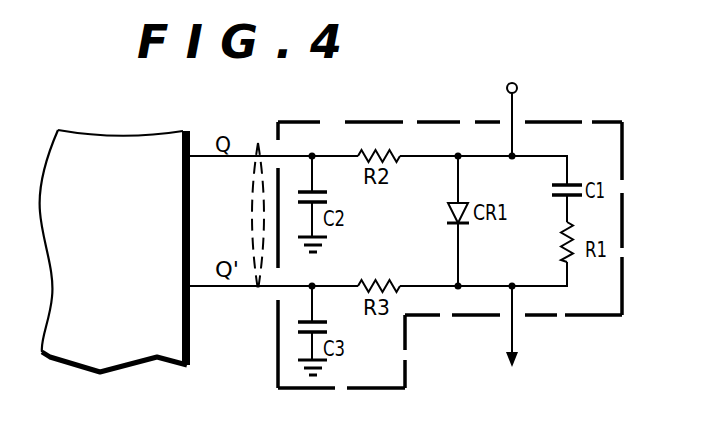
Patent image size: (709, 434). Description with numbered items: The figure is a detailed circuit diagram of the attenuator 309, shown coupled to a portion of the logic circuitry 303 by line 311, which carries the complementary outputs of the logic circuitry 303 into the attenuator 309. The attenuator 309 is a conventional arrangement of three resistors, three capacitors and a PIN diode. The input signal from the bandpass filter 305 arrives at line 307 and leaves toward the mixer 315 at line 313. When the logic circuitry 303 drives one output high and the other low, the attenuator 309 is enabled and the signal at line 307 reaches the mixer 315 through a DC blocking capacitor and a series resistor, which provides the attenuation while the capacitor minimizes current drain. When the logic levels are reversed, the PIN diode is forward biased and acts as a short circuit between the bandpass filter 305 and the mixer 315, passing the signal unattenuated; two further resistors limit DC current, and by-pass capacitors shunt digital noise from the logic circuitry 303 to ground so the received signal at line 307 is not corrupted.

The logic circuitry 303 is at (147, 133).
The bandpass filter 305 is at (512, 61).
The input signal line 307 is at (514, 108).
The attenuator 309 is at (623, 211).
The line 311 is at (261, 292).
The output line 313 is at (514, 340).
The mixer 315 is at (512, 389).